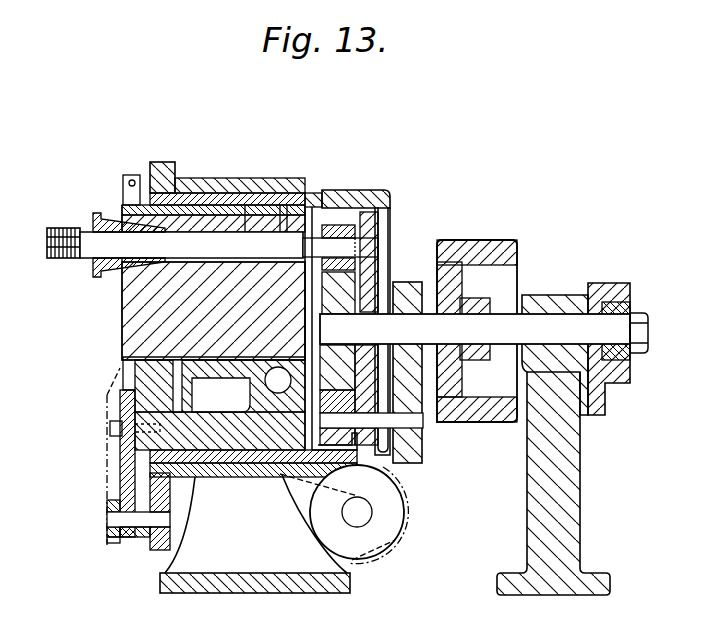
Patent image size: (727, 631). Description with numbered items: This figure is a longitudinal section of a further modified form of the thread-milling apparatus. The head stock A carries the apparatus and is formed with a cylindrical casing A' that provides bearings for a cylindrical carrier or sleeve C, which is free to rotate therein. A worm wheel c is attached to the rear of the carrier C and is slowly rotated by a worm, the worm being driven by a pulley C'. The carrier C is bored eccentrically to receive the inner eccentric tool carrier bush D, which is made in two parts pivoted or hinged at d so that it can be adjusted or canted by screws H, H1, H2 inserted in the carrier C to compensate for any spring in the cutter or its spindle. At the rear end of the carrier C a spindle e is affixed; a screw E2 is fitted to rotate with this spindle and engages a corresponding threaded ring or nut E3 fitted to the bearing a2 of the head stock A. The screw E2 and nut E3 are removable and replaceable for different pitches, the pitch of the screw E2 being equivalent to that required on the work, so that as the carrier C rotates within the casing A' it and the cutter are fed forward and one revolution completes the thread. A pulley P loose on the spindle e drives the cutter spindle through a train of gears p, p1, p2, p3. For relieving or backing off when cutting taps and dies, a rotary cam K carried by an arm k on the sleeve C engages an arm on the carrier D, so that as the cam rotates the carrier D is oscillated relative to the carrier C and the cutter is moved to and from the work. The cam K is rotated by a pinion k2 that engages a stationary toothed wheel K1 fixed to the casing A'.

The stationary toothed wheel K1 is at (166, 162).
The screw H1 is at (186, 218).
The screw H2 is at (289, 235).
The cylindrical casing A' is at (240, 172).
The cylindrical carrier or sleeve C is at (347, 296).
The worm wheel c is at (349, 191).
The gear p3 is at (341, 231).
The gear p2 is at (330, 364).
The gear p1 is at (420, 452).
The gear p is at (410, 285).
The pulley P is at (477, 331).
The bearing a2 is at (566, 296).
The threaded ring or nut E3 is at (609, 284).
The screw E2 is at (640, 313).
The spindle e is at (475, 329).
The eccentric tool carrier bush D is at (213, 267).
The screw H is at (177, 382).
The pivot or hinge d is at (278, 380).
The head stock A is at (372, 483).
The arm k is at (105, 472).
The rotary cam K is at (108, 547).
The pinion k2 is at (152, 551).
The pulley C' is at (359, 514).